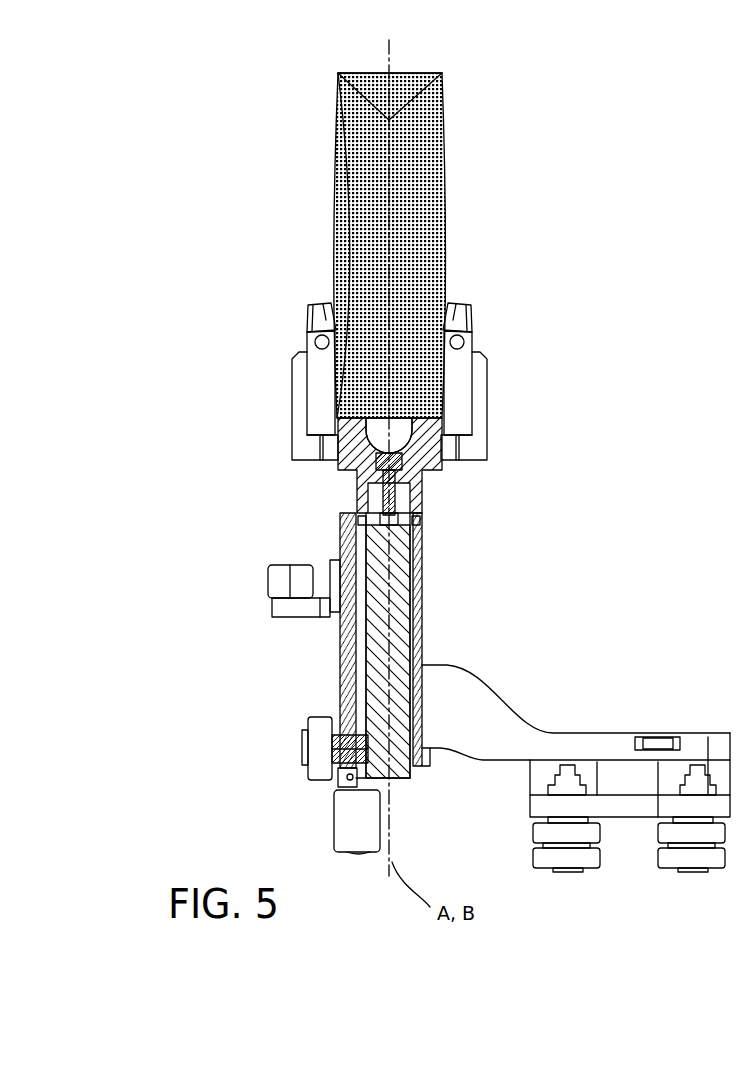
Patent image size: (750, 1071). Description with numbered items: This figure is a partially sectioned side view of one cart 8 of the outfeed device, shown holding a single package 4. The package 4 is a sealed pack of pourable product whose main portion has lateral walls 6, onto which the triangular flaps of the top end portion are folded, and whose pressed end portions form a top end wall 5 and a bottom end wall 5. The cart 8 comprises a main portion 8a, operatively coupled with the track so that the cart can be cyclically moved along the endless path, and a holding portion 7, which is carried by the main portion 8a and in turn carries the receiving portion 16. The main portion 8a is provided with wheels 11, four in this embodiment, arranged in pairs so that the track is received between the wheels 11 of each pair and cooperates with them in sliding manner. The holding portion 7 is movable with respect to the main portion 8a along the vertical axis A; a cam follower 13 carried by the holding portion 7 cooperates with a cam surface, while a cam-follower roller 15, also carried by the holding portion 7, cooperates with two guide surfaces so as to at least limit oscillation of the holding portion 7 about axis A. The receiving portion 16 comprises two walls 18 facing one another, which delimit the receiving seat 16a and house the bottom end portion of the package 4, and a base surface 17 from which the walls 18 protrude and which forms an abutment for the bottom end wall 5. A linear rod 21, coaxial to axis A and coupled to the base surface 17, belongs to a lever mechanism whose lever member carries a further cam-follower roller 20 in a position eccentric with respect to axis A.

The package 4 is at (425, 170).
The end wall 5 is at (421, 65).
The lateral wall 6 is at (428, 242).
The holding portion 7 is at (424, 570).
The cart 8 is at (613, 706).
The main portion 8a is at (502, 728).
The wheels 11 is at (587, 863).
The cam follower 13 is at (320, 722).
The cam-follower roller 15 is at (275, 582).
The receiving portion 16 is at (489, 433).
The receiving seat 16a is at (337, 336).
The base surface 17 is at (328, 452).
The walls 18 is at (315, 388).
The further cam-follower roller 20 is at (343, 820).
The linear rod 21 is at (398, 647).